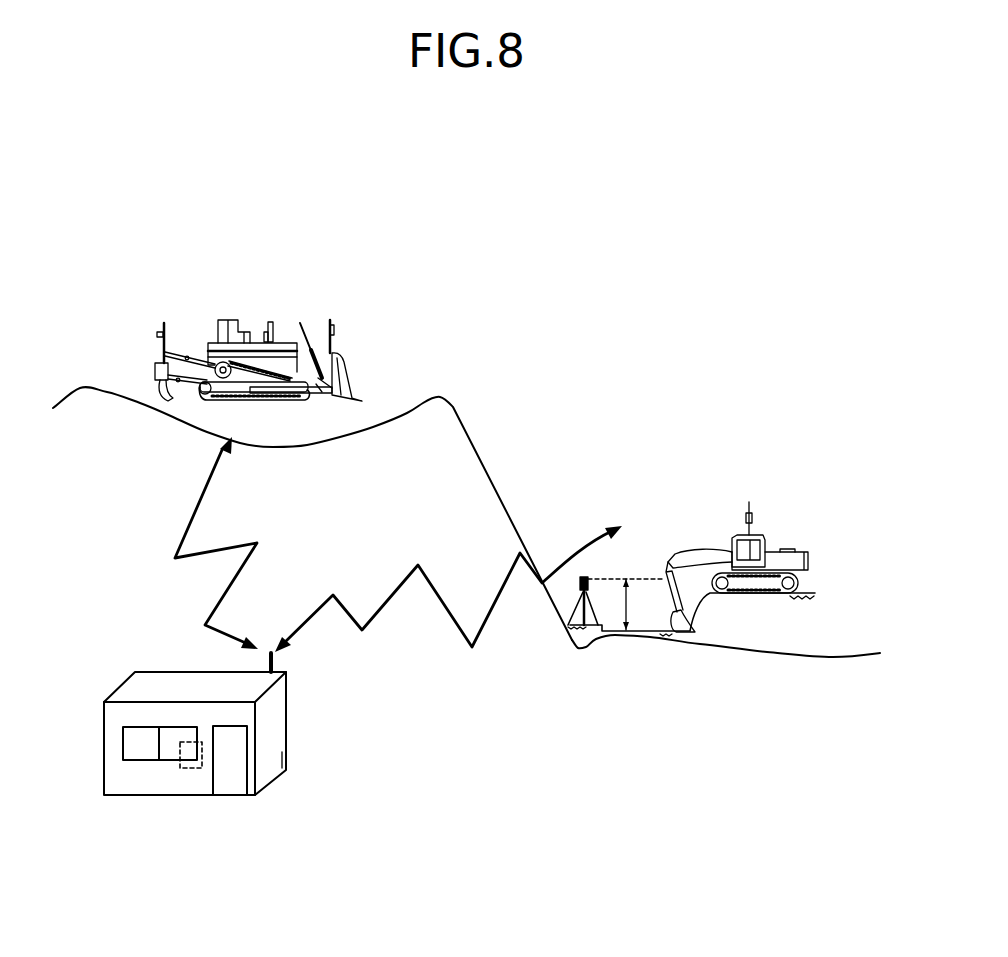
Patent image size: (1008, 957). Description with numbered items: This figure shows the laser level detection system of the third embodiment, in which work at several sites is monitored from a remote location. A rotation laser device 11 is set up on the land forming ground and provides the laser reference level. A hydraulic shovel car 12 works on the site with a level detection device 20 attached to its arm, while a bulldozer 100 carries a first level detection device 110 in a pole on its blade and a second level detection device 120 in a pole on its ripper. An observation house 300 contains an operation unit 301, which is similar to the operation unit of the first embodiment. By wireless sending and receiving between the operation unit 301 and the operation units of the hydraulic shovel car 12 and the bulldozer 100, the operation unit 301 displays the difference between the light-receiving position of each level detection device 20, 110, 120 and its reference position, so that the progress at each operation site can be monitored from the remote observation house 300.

The bulldozer 100 is at (264, 308).
The first level detection device 110 is at (335, 331).
The second level detection device 120 is at (157, 335).
The hydraulic shovel car 12 is at (780, 532).
The level detection device 20 is at (680, 567).
The rotation laser device 11 is at (580, 578).
The observation house 300 is at (287, 723).
The operation unit 301 is at (190, 740).